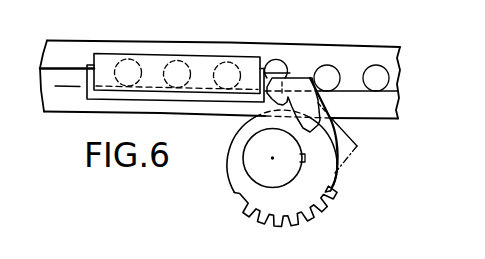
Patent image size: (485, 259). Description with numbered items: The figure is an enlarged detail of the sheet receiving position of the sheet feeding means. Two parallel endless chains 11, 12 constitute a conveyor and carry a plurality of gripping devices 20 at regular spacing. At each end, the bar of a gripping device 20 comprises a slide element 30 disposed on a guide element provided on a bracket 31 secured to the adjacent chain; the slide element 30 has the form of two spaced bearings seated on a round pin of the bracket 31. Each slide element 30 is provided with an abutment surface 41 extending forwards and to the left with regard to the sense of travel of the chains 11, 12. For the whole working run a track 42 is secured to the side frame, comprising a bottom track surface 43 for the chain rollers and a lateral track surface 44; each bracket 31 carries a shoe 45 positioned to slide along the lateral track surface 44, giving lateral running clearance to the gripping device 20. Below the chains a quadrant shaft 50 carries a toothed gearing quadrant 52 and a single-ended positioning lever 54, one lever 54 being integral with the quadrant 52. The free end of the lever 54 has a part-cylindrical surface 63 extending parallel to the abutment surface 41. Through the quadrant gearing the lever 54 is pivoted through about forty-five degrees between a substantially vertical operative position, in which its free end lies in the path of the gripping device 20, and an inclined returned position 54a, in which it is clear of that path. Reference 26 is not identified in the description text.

The guide rail base 26 is at (63, 66).
The shoe 45 is at (107, 62).
The gripping device 20 is at (160, 54).
The bracket 31 is at (203, 57).
The endless chain 11 is at (233, 64).
The abutment surface 41 is at (273, 64).
The part-cylindrical surface 63 is at (286, 66).
The endless chain 12 is at (325, 64).
The track 42 is at (337, 46).
The lateral track surface 44 is at (397, 62).
The bottom track surface 43 is at (390, 90).
The positioning lever 54 is at (322, 98).
The inclined position 54a is at (358, 147).
The toothed gearing quadrant 52 is at (322, 201).
The quadrant shaft 50 is at (253, 160).
The slide element 30 is at (205, 101).